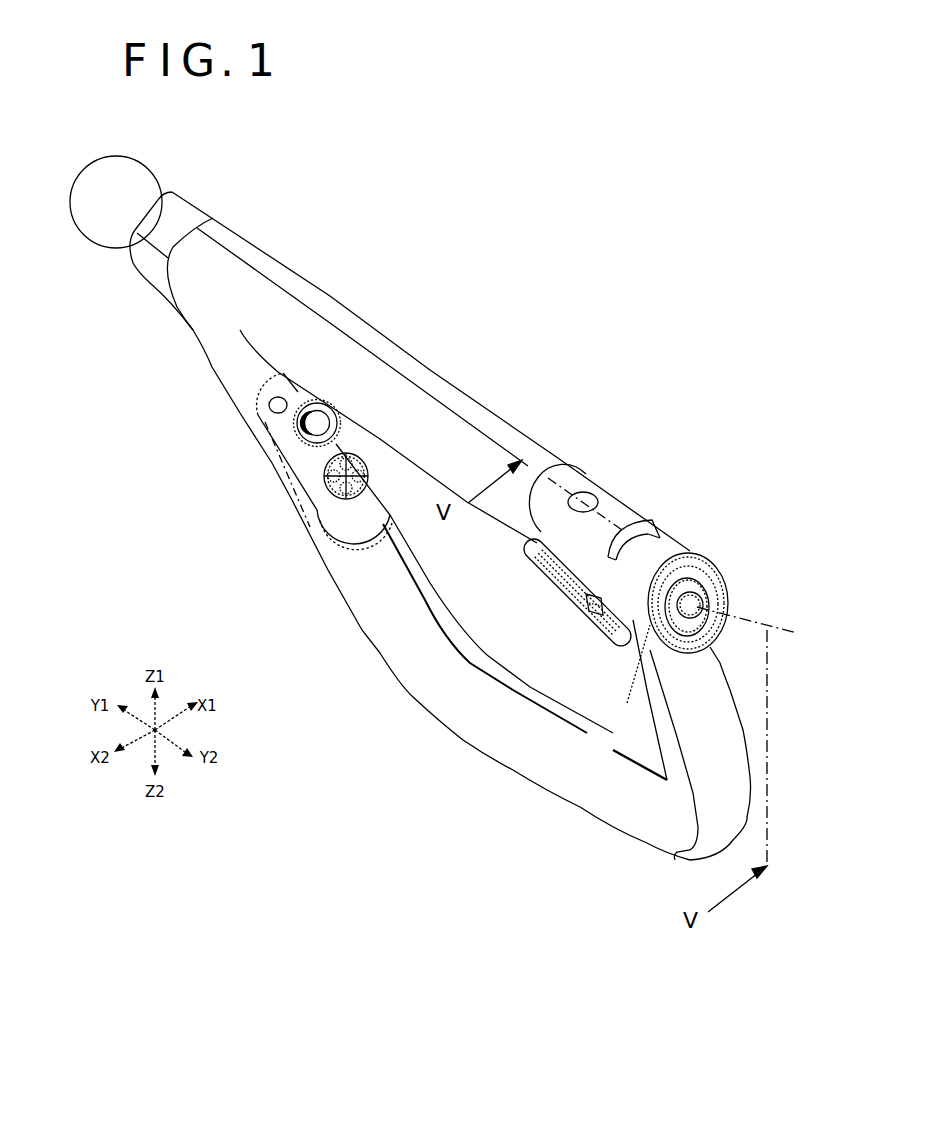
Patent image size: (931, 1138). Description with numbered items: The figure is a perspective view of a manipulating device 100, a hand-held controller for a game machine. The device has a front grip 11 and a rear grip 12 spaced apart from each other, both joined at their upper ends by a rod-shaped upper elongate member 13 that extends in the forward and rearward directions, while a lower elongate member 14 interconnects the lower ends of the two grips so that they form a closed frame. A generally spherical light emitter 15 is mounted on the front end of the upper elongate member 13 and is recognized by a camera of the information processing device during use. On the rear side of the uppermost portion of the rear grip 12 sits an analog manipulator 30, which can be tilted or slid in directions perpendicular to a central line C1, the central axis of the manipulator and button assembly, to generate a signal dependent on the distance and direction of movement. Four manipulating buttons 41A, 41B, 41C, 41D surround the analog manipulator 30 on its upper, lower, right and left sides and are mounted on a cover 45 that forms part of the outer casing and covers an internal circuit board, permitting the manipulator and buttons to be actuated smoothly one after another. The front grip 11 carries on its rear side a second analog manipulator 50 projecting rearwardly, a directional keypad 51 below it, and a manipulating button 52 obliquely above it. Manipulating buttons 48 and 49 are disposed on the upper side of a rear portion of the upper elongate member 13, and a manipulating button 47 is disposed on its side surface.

The manipulating device 100 is at (452, 242).
The light emitter 15 is at (133, 172).
The upper elongate member 13 is at (346, 312).
The front grip 11 is at (287, 490).
The rear grip 12 is at (648, 713).
The lower elongate member 14 is at (595, 803).
The analog manipulator 50 is at (321, 418).
The directional keypad 51 is at (341, 468).
The manipulating button 52 is at (273, 404).
The cover 45 is at (612, 508).
The manipulating button 48 is at (582, 498).
The manipulating button 47 is at (537, 550).
The manipulating button 49 is at (580, 598).
The analog manipulator 30 is at (688, 570).
The manipulating button 41A is at (684, 560).
The manipulating button 41B is at (712, 583).
The manipulating button 41C is at (691, 651).
The manipulating button 41D is at (657, 627).
The central line C1 is at (797, 743).